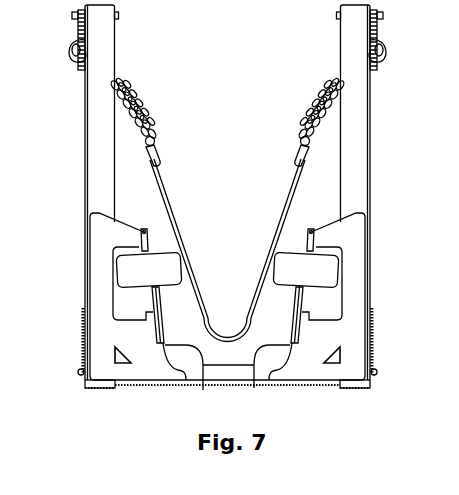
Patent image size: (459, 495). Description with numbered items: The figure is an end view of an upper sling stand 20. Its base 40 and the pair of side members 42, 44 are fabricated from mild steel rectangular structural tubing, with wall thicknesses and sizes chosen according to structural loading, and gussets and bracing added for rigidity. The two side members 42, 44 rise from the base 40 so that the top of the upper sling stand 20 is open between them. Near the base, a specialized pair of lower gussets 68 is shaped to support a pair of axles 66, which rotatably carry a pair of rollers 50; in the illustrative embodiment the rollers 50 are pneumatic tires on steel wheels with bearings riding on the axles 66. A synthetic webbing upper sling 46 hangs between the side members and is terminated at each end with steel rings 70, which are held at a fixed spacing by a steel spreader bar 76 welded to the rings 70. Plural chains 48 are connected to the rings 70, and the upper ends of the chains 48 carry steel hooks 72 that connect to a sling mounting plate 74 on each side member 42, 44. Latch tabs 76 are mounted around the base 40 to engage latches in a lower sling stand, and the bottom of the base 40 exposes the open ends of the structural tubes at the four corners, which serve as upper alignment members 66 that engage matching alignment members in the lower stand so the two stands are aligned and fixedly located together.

The upper sling stand 20 is at (451, 211).
The base 40 is at (168, 385).
The side member 42 is at (85, 128).
The side member 44 is at (376, 170).
The upper sling 46 is at (180, 225).
The chains 48 is at (147, 118).
The rollers 50 is at (158, 258).
The axles / upper alignment members 66 is at (308, 292).
The lower gussets 68 is at (254, 388).
The steel rings 70 is at (150, 147).
The steel hooks 72 is at (79, 52).
The sling mounting plate 74 is at (79, 32).
The latch tabs / spreader bar 76 is at (81, 371).